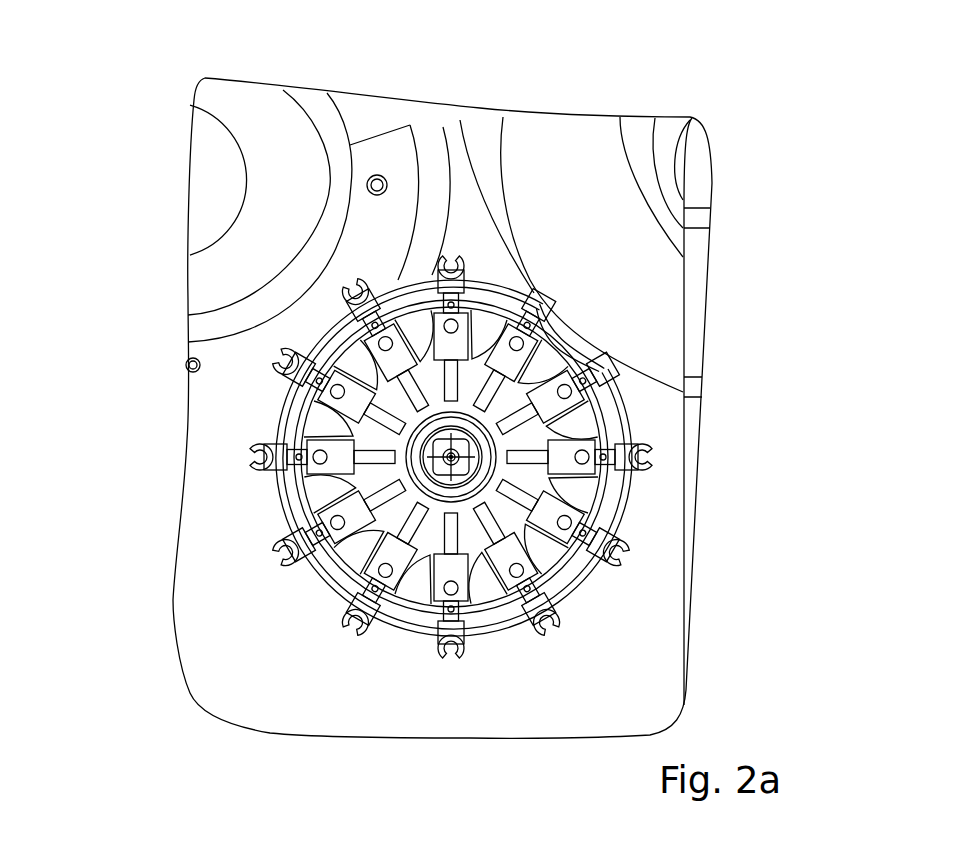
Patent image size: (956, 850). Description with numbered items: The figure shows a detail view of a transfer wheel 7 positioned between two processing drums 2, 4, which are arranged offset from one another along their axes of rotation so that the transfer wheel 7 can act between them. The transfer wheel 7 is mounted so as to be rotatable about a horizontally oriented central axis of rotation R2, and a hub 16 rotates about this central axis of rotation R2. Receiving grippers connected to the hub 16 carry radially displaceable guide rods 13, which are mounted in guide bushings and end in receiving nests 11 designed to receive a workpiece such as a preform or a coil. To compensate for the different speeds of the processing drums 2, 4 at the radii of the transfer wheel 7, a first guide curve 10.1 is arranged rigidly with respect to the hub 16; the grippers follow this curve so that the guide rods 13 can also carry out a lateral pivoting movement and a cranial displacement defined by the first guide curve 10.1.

The processing drum 2 is at (230, 186).
The processing drum 4 is at (583, 178).
The transfer wheel 7 is at (634, 498).
The first guide curve 10.1 is at (496, 292).
The receiving nest 11 is at (355, 625).
The guide rod 13 is at (407, 383).
The hub 16 is at (483, 412).
The central axis of rotation R2 is at (451, 457).